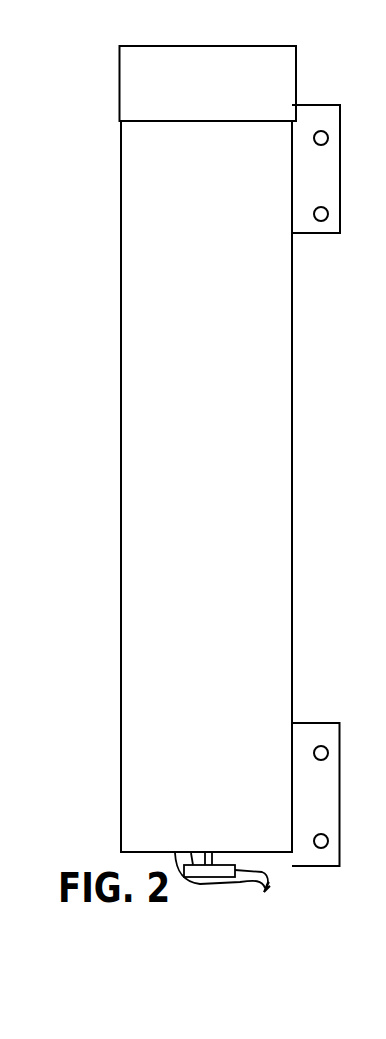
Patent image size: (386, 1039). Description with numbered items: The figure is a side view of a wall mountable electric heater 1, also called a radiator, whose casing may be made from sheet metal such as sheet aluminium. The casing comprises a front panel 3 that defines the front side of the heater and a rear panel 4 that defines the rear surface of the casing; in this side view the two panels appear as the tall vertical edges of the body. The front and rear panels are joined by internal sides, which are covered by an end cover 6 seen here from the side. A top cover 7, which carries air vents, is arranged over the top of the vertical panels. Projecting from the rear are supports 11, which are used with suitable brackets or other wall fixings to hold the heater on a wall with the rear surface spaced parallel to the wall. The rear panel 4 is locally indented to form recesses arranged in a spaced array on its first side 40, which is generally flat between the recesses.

The heater 1 is at (91, 252).
The front panel 3 is at (121, 407).
The rear panel 4 is at (293, 361).
The end cover 6 is at (132, 512).
The top cover 7 is at (124, 77).
The support 11 is at (333, 173).
The first side 40 is at (298, 475).